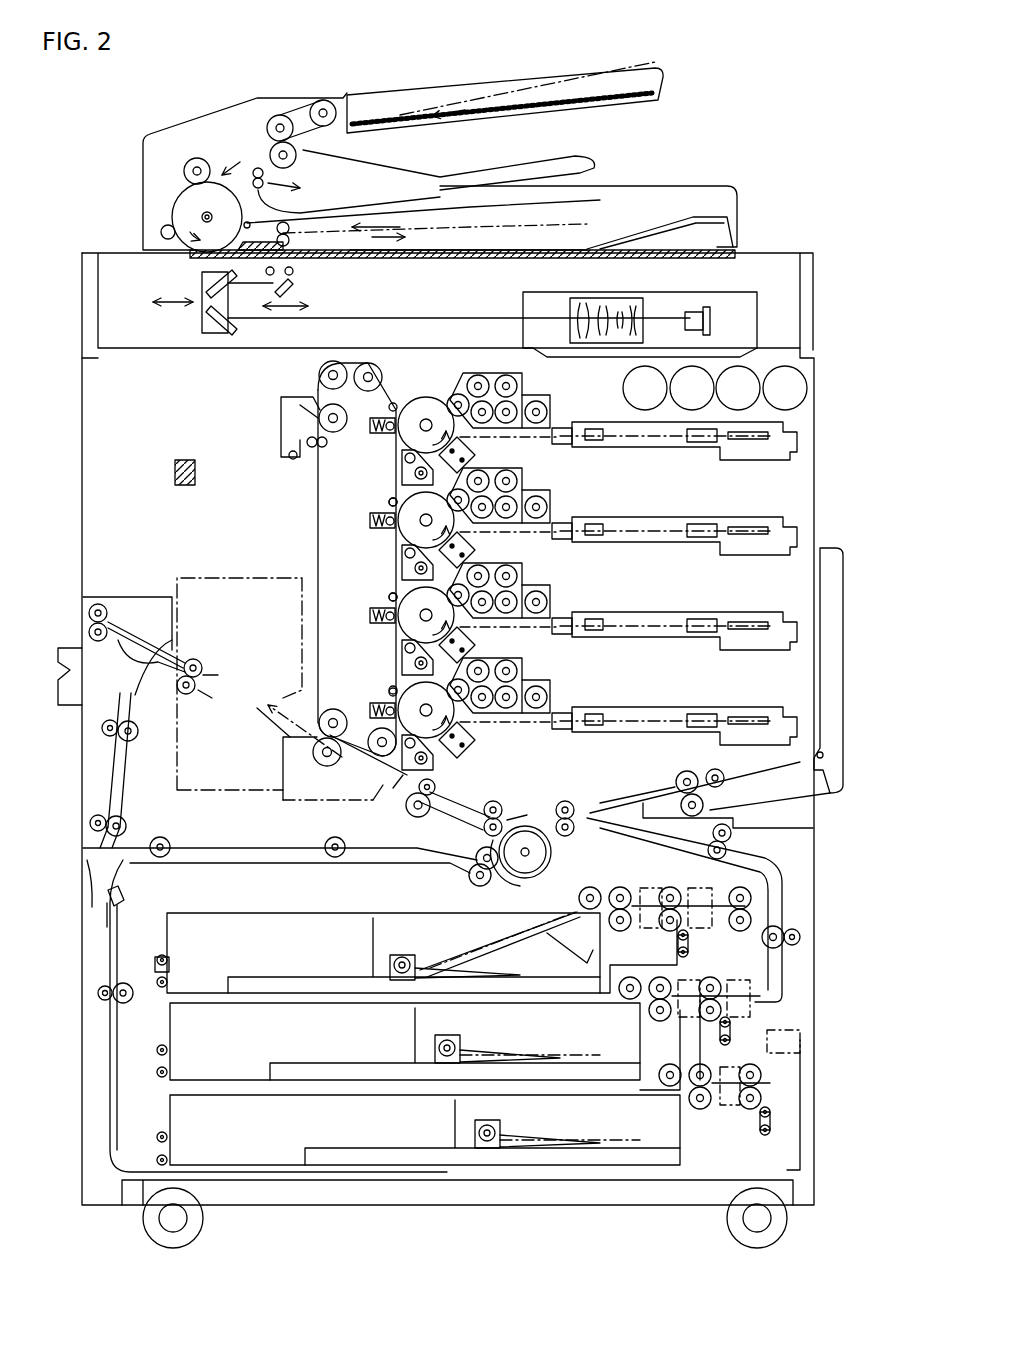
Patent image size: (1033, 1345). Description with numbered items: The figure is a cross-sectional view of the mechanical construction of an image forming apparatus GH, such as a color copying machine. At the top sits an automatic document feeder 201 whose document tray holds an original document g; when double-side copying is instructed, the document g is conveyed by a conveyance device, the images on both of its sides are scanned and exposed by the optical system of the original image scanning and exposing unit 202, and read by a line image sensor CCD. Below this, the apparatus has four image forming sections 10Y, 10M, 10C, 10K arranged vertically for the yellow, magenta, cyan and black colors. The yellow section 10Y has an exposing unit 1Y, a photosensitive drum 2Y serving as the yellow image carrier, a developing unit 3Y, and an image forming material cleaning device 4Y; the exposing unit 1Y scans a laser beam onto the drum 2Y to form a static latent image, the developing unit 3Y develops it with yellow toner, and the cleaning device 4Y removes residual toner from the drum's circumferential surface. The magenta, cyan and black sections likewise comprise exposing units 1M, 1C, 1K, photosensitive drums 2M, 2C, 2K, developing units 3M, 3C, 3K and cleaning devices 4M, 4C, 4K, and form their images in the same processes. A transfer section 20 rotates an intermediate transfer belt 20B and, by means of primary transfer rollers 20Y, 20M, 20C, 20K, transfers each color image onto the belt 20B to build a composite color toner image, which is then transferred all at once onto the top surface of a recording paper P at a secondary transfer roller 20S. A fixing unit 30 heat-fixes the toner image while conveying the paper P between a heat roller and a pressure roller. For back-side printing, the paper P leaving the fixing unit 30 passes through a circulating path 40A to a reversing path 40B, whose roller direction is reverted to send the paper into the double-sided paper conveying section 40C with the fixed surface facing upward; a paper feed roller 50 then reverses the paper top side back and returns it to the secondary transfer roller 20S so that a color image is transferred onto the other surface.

The image forming apparatus GH is at (148, 135).
The original document g is at (519, 93).
The automatic document feeder 201 is at (760, 131).
The original image scanning and exposing unit 202 is at (775, 250).
The line image sensor CCD is at (710, 318).
The image forming section 10Y is at (628, 397).
The image forming section 10M is at (648, 487).
The image forming section 10C is at (640, 584).
The image forming section 10K is at (640, 679).
The photosensitive drum 2Y is at (426, 424).
The photosensitive drum 2M is at (420, 515).
The photosensitive drum 2C is at (420, 610).
The photosensitive drum 2K is at (420, 702).
The developing unit 3Y is at (494, 375).
The developing unit 3M is at (490, 475).
The developing unit 3C is at (490, 570).
The developing unit 3K is at (490, 665).
The image forming material cleaning device 4Y is at (405, 484).
The image forming material cleaning device 4M is at (405, 578).
The image forming material cleaning device 4C is at (405, 658).
The image forming material cleaning device 4K is at (433, 760).
The primary transfer roller 20Y is at (372, 436).
The primary transfer roller 20M is at (370, 532).
The primary transfer roller 20C is at (370, 625).
The primary transfer roller 20K is at (376, 705).
The exposing unit 1Y is at (673, 452).
The exposing unit 1M is at (671, 547).
The exposing unit 1C is at (688, 645).
The exposing unit 1K is at (643, 736).
The transfer section 20 is at (318, 519).
The intermediate transfer belt 20B is at (318, 548).
The secondary transfer roller 20S is at (318, 753).
The fixing unit 30 is at (207, 592).
The circulating path 40A is at (127, 778).
The reversing path 40B is at (120, 960).
The double-sided paper conveying section 40C is at (252, 852).
The paper feed roller 50 is at (497, 805).
The recording paper P is at (495, 945).